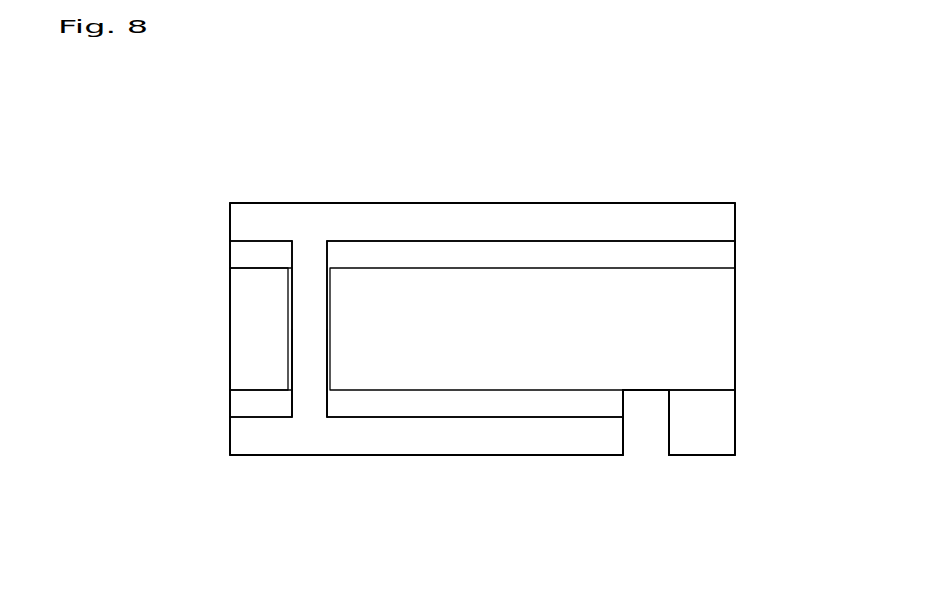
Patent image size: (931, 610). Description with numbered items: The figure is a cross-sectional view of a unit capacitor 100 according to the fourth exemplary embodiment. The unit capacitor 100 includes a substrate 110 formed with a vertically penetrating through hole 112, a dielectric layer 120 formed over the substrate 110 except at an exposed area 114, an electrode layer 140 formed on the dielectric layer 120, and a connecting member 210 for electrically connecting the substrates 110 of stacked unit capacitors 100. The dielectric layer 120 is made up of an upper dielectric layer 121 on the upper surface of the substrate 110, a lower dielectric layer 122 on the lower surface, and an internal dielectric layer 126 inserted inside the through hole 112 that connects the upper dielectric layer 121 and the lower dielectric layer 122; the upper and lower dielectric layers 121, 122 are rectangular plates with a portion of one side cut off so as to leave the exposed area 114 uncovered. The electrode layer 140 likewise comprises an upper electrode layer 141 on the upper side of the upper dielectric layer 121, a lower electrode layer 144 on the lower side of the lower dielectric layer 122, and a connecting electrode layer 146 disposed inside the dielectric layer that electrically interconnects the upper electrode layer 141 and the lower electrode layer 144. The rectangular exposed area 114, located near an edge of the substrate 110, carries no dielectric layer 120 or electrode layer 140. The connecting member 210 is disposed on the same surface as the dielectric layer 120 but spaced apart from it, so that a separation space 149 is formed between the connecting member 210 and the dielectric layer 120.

The unit capacitor 100 is at (560, 128).
The substrate 110 is at (712, 326).
The through hole 112 is at (307, 343).
The exposed area 114 is at (630, 392).
The dielectric layer 120 is at (720, 256).
The upper dielectric layer 121 is at (238, 253).
The lower dielectric layer 122 is at (240, 404).
The internal dielectric layer 126 is at (292, 296).
The electrode layer 140 is at (688, 203).
The upper electrode layer 141 is at (408, 216).
The lower electrode layer 144 is at (352, 440).
The connecting electrode layer 146 is at (305, 368).
The separation space 149 is at (658, 421).
The connecting member 210 is at (705, 440).